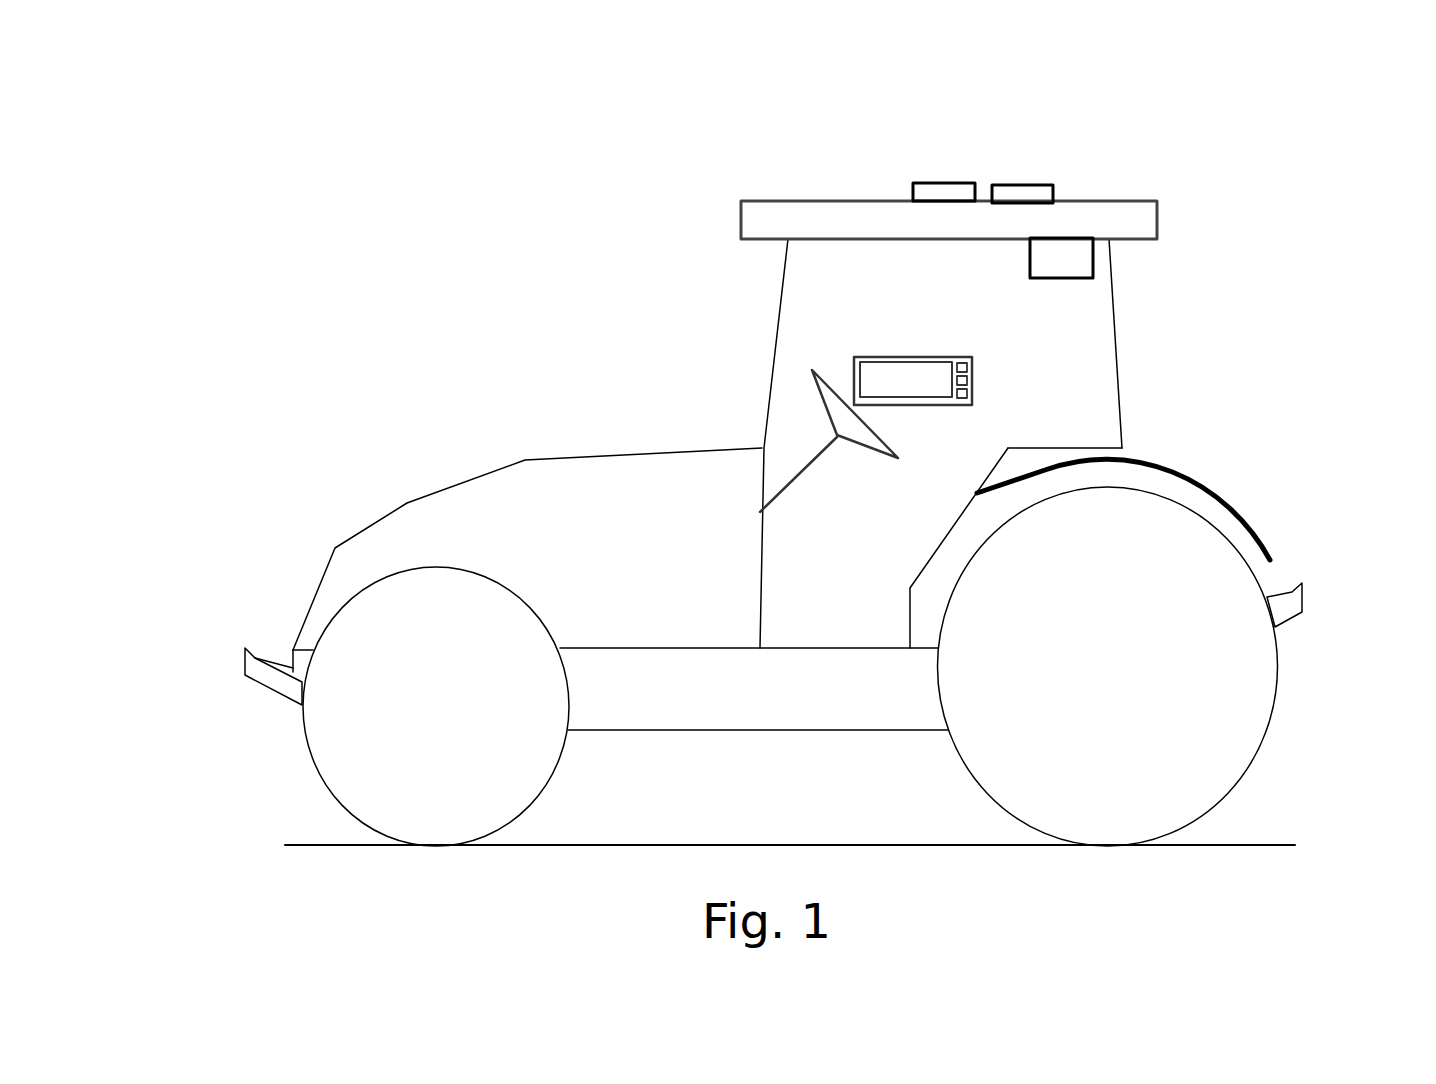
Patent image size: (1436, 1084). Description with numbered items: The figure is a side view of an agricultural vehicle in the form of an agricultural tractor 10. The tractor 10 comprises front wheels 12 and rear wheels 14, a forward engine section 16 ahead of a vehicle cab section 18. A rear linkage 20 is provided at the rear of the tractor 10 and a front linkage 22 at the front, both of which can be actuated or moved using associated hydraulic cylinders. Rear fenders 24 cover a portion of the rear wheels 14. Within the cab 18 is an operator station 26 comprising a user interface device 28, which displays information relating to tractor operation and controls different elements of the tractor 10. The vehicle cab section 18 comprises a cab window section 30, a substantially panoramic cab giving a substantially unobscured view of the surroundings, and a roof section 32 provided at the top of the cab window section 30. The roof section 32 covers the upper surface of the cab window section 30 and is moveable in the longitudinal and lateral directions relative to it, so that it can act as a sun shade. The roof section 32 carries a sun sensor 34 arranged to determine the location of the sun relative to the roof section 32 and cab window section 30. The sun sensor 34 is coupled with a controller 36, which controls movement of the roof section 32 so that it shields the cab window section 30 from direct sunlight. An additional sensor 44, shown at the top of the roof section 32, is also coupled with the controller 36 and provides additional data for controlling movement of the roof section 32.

The agricultural tractor 10 is at (342, 181).
The front wheels 12 is at (428, 823).
The rear wheels 14 is at (1138, 797).
The forward engine section 16 is at (457, 497).
The vehicle cab section 18 is at (1195, 247).
The rear linkage 20 is at (1287, 605).
The front linkage 22 is at (275, 677).
The rear fenders 24 is at (1195, 485).
The operator station 26 is at (735, 337).
The user interface device 28 is at (858, 358).
The cab window section 30 is at (1097, 313).
The roof section 32 is at (847, 210).
The sun sensor 34 is at (948, 190).
The controller 36 is at (1063, 250).
The additional sensor 44 is at (1028, 193).